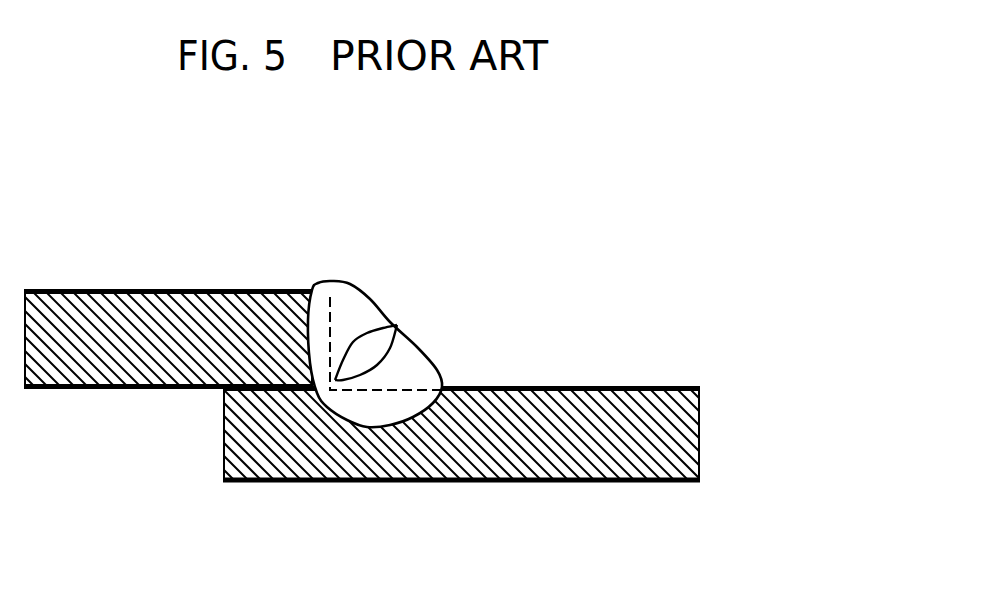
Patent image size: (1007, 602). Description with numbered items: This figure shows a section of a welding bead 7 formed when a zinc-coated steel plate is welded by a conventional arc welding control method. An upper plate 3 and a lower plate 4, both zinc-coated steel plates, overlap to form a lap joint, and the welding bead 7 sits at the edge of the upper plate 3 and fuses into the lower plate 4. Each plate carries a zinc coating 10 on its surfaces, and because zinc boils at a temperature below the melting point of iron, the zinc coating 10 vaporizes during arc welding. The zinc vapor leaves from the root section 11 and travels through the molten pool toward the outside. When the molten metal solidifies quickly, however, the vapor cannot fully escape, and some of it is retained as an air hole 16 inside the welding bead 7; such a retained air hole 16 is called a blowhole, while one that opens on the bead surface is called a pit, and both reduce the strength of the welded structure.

The upper plate 3 is at (93, 333).
The lower plate 4 is at (592, 427).
The welding bead 7 is at (442, 368).
The zinc coating 10 is at (173, 288).
The root section 11 is at (333, 391).
The air hole 16 is at (385, 350).